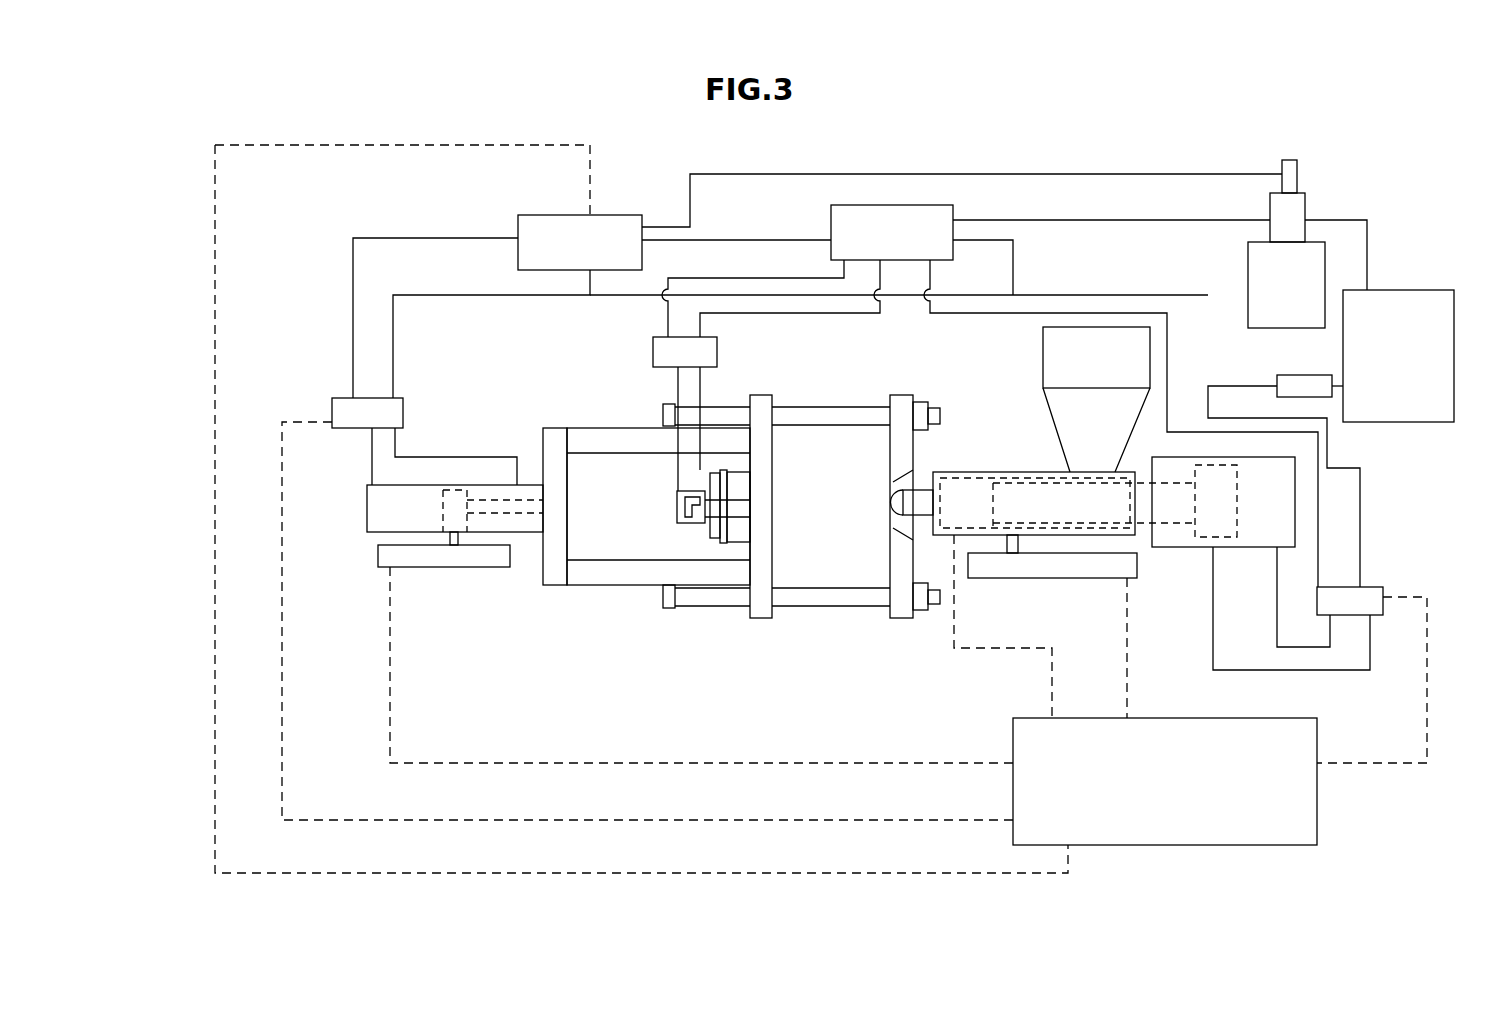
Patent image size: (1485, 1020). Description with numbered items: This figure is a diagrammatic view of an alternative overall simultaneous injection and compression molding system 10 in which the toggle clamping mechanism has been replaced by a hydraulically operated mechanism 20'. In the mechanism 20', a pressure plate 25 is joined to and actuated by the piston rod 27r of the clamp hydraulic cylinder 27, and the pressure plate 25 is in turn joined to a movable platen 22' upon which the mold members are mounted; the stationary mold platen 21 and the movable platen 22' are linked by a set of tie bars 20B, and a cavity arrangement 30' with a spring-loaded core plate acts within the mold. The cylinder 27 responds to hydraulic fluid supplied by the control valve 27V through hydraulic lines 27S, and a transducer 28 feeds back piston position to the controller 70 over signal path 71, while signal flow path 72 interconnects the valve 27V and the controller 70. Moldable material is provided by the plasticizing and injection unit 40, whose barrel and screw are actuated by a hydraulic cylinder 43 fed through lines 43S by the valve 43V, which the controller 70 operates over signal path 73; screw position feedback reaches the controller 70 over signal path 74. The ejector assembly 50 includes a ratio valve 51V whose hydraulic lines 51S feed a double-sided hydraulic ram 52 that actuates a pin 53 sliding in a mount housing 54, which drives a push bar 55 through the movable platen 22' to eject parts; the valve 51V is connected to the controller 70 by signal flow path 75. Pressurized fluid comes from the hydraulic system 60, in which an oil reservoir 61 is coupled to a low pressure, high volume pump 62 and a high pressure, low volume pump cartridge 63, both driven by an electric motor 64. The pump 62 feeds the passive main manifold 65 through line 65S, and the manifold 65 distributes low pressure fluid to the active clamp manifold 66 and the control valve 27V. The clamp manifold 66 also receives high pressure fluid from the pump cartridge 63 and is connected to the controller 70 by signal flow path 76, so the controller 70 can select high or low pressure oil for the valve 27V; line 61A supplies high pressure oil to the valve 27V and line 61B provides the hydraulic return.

The simultaneous injection and compression molding system 10 is at (250, 125).
The signal flow path 76 is at (213, 262).
The active manifold 66 is at (518, 215).
The line 61A is at (395, 238).
The line 61B is at (465, 298).
The passive manifold 65 is at (831, 225).
The line 65S is at (1085, 215).
The hydraulic system 60 is at (1267, 198).
The pump 62 is at (1310, 203).
The pump cartridge 63 is at (1278, 160).
The electric motor 64 is at (1248, 268).
The oil reservoir 61 is at (1378, 428).
The ratio valve 51V is at (653, 352).
The hydraulic lines 51S is at (676, 395).
The control valve 27V is at (398, 397).
The hydraulic lines 27S is at (430, 453).
The hydraulic cylinder 27 is at (362, 508).
The piston rod 27r is at (552, 505).
The transducer 28 is at (480, 570).
The pressure plate 25 is at (553, 588).
The hydraulically operated mechanism 20' is at (625, 567).
The tie bars 20B is at (668, 612).
The movable platen 22' is at (742, 539).
The stationary mold platen 21 is at (905, 622).
The cavity arrangement 30' is at (863, 459).
The ejector assembly 50 is at (709, 488).
The double-sided hydraulic ram 52 is at (686, 490).
The pin 53 is at (757, 505).
The mount housing 54 is at (727, 522).
The push bar 55 is at (732, 488).
The unit 40 is at (1030, 608).
The signal path 74 is at (1120, 612).
The signal flow path 75 is at (968, 652).
The signal path 71 is at (745, 762).
The signal flow path 72 is at (575, 820).
The signal path 73 is at (1425, 672).
The hydraulic cylinder 43 is at (1253, 548).
The lines 43S is at (1275, 647).
The valve 43V is at (1367, 585).
The controller 70 is at (1250, 848).